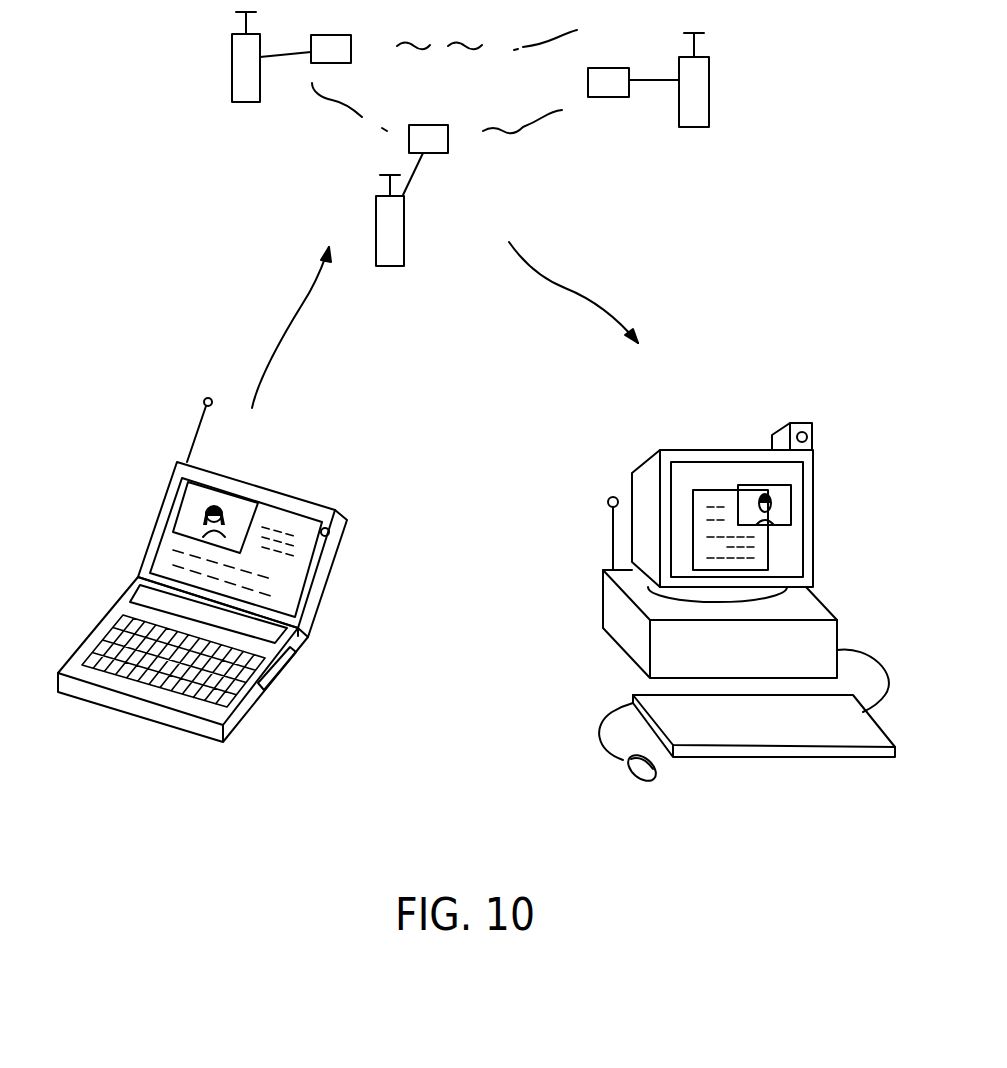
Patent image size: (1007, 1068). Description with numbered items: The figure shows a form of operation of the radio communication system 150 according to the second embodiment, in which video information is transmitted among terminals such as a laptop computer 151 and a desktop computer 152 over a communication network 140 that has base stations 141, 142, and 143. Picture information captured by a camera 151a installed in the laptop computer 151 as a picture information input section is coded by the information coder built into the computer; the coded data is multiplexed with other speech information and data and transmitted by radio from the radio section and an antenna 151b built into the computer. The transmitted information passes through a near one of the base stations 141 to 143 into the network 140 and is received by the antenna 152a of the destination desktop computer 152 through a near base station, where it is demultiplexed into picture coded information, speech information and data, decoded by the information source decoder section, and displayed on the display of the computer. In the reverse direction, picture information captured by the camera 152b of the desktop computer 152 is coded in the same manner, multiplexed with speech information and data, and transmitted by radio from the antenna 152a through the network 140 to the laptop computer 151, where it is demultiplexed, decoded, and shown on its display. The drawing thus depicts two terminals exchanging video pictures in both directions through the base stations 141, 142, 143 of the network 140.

The communication network 140 is at (451, 66).
The base station 141 is at (246, 102).
The base station 142 is at (390, 266).
The base station 143 is at (693, 127).
The radio communication system 150 is at (484, 472).
The laptop computer 151 is at (298, 480).
The camera 151a is at (329, 533).
The antenna 151b is at (204, 401).
The desktop computer 152 is at (720, 440).
The antenna 152a is at (610, 524).
The camera 152b is at (797, 423).